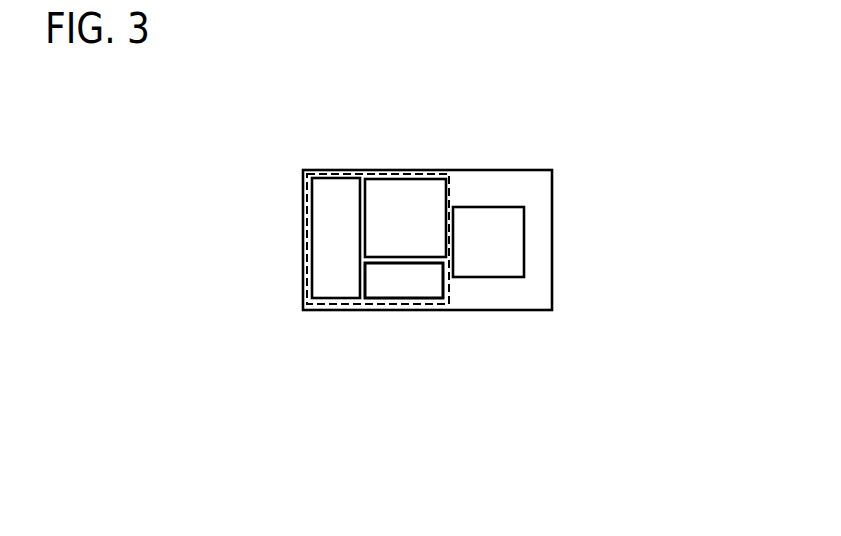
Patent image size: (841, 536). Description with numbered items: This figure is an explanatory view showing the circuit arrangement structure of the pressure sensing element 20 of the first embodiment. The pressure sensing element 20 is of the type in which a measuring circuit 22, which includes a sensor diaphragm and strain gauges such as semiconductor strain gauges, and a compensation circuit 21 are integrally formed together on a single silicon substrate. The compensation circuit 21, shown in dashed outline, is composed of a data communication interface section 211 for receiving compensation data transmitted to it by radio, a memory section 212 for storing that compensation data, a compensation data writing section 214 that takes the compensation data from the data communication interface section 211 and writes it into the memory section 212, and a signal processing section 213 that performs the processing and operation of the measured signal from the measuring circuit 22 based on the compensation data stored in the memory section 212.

The pressure sensing element 20 is at (571, 162).
The compensation circuit 21 is at (362, 172).
The measuring circuit 22 is at (490, 206).
The data communication interface section 211 is at (333, 239).
The memory section 212 is at (403, 282).
The signal processing section 213 is at (397, 207).
The compensation data writing section 214 is at (404, 280).